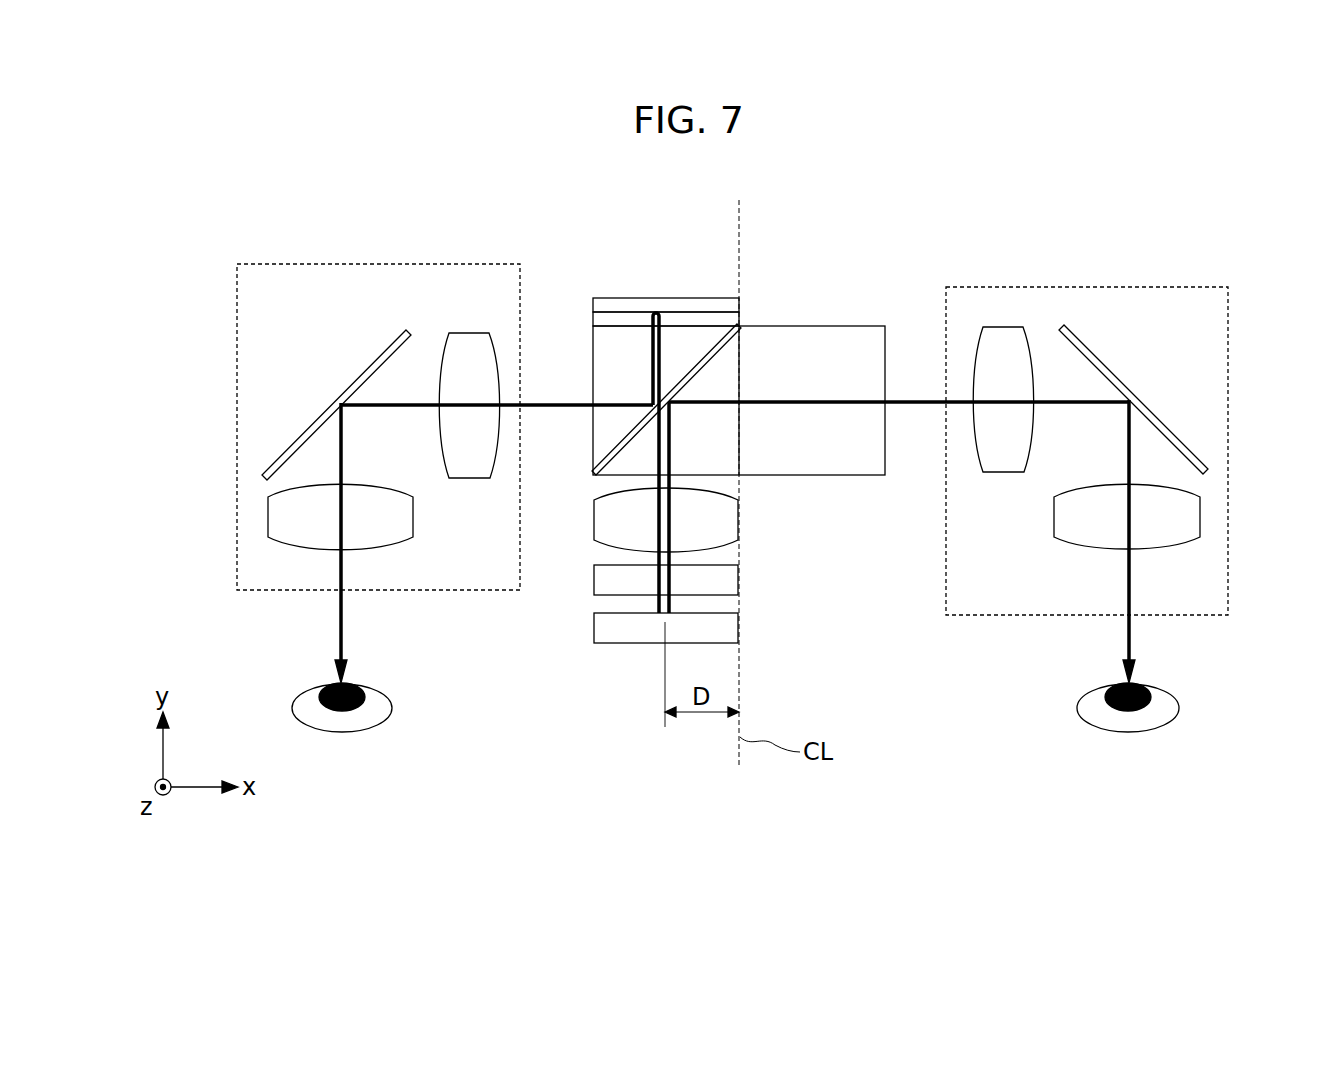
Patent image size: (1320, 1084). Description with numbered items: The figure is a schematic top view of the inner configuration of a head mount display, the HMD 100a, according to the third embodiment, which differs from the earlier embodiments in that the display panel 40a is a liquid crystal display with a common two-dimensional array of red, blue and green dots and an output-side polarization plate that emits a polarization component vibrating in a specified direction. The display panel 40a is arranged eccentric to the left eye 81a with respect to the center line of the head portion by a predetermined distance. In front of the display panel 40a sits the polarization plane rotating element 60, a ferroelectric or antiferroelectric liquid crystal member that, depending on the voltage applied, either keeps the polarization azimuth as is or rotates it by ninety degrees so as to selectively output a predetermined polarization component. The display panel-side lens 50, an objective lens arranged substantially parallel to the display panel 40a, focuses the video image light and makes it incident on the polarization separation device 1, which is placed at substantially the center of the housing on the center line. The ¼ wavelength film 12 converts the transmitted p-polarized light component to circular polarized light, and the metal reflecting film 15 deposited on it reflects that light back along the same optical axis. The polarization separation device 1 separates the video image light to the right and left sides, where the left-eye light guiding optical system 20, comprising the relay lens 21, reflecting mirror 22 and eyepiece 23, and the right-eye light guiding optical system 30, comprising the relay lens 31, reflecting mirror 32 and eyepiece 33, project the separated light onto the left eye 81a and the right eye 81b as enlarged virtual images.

The HMD 100a is at (1066, 153).
The polarization separation device 1 is at (838, 312).
The ¼ wavelength film 12 is at (732, 320).
The metal reflecting film 15 is at (697, 303).
The left-eye light guiding optical system 20 is at (318, 264).
The relay lens 21 is at (470, 345).
The reflecting mirror 22 is at (377, 362).
The eyepiece 23 is at (402, 518).
The right-eye light guiding optical system 30 is at (1135, 287).
The relay lens 31 is at (1008, 335).
The reflecting mirror 32 is at (1102, 365).
The eyepiece 33 is at (1073, 535).
The display panel 40a is at (727, 627).
The display panel-side lens 50 is at (727, 525).
The polarization plane rotating element 60 is at (727, 582).
The left eye 81a is at (395, 707).
The right eye 81b is at (1098, 730).